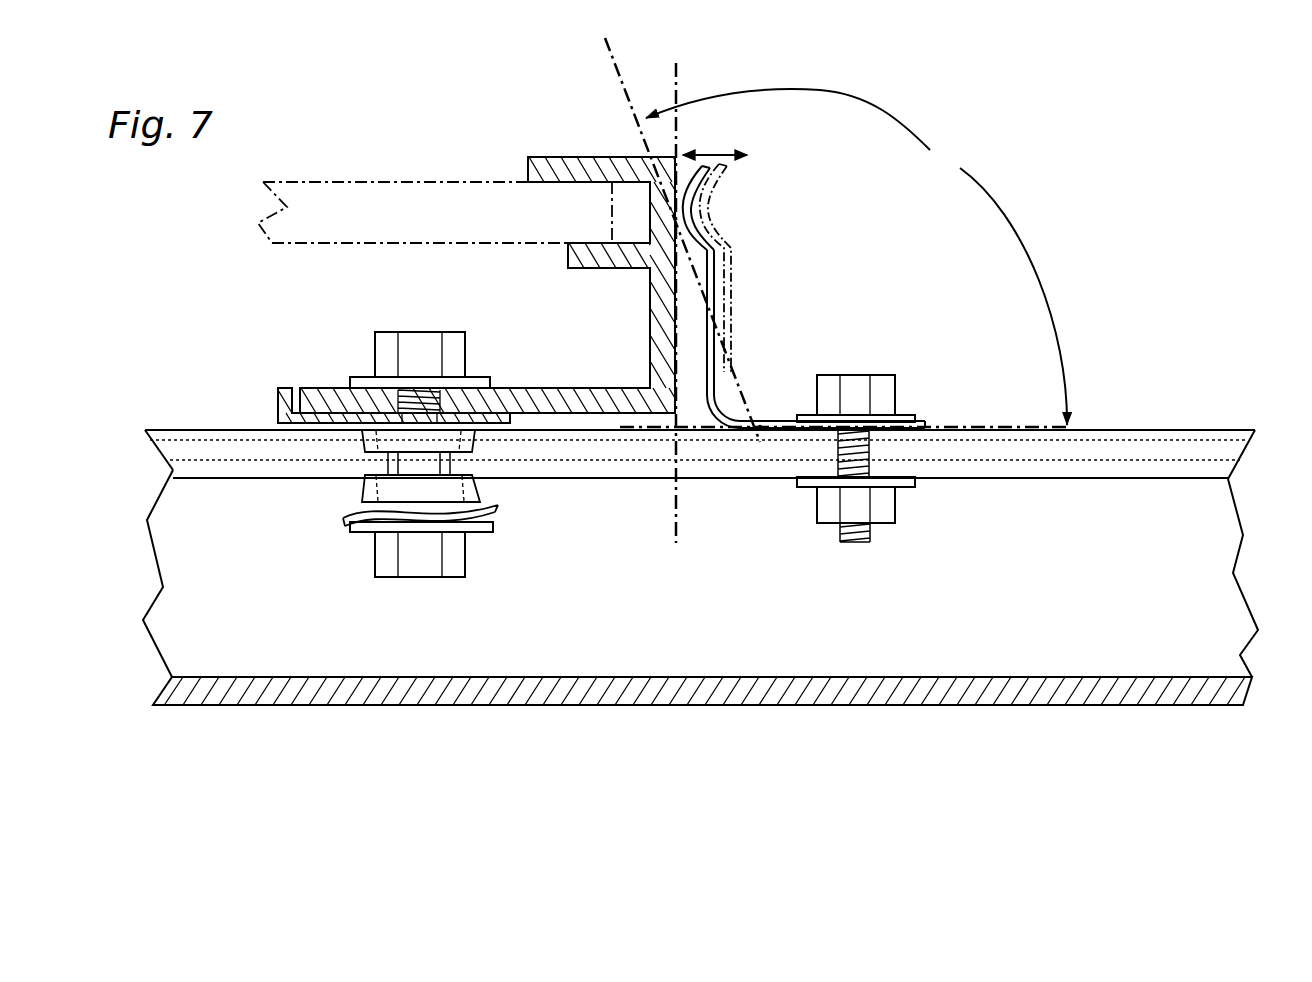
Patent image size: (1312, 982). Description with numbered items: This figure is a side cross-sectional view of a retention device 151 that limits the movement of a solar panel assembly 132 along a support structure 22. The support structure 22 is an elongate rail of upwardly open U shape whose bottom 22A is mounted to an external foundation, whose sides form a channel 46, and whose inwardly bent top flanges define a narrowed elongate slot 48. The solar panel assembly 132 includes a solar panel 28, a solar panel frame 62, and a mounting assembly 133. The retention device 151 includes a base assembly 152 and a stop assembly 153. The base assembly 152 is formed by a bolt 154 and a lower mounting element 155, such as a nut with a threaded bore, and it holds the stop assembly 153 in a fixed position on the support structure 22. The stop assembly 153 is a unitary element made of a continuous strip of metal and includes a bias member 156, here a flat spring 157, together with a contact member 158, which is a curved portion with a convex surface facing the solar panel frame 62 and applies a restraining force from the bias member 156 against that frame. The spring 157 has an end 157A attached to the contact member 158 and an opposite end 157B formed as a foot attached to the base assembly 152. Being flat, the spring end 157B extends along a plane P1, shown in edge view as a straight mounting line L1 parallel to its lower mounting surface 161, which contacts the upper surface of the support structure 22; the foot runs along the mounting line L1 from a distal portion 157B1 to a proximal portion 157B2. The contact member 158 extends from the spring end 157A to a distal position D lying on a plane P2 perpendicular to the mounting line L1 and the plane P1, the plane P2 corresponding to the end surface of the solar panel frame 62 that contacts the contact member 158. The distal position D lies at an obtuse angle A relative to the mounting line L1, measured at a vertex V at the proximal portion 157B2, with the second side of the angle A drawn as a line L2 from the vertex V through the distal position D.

The support structure 22 is at (1080, 429).
The bottom 22A is at (1213, 426).
The narrowed elongate slot 48 is at (1203, 448).
The channel 46 is at (1258, 659).
The solar panel 28 is at (377, 248).
The solar panel frame 62 is at (648, 328).
The solar panel assembly 132 is at (314, 277).
The mounting assembly 133 is at (318, 527).
The retention device 151 is at (888, 270).
The base assembly 152 is at (930, 365).
The stop assembly 153 is at (808, 267).
The bolt 154 is at (861, 373).
The lower mounting element 155 is at (815, 503).
The bias member 156 is at (754, 337).
The spring 157 is at (720, 294).
The end 157A is at (725, 262).
The end 157B is at (780, 421).
The distal portion 157B1 is at (900, 436).
The proximal portion 157B2 is at (787, 437).
The contact member 158 is at (689, 210).
The lower mounting surface 161 is at (916, 437).
The mounting line L1 is at (843, 396).
The plane P1 is at (974, 418).
The line L2 is at (615, 50).
The plane P2 is at (679, 77).
The distal position D is at (674, 214).
The obtuse angle A is at (856, 257).
The angle vertex V is at (760, 432).